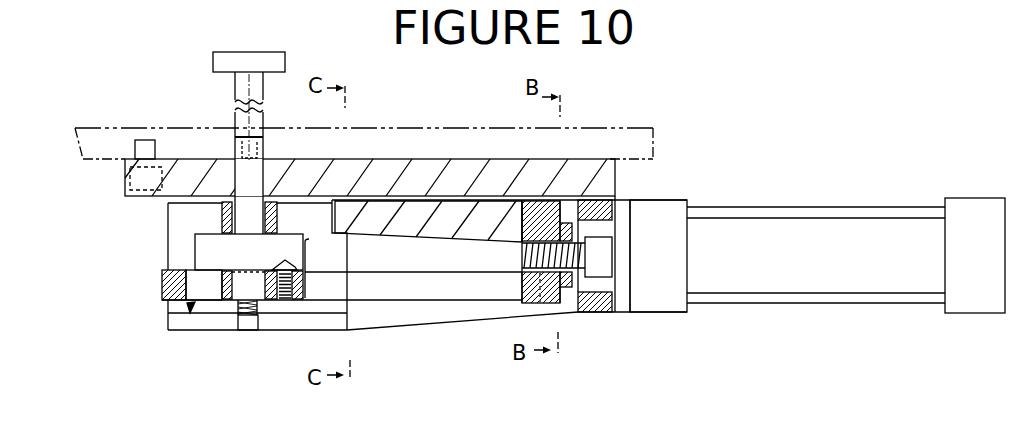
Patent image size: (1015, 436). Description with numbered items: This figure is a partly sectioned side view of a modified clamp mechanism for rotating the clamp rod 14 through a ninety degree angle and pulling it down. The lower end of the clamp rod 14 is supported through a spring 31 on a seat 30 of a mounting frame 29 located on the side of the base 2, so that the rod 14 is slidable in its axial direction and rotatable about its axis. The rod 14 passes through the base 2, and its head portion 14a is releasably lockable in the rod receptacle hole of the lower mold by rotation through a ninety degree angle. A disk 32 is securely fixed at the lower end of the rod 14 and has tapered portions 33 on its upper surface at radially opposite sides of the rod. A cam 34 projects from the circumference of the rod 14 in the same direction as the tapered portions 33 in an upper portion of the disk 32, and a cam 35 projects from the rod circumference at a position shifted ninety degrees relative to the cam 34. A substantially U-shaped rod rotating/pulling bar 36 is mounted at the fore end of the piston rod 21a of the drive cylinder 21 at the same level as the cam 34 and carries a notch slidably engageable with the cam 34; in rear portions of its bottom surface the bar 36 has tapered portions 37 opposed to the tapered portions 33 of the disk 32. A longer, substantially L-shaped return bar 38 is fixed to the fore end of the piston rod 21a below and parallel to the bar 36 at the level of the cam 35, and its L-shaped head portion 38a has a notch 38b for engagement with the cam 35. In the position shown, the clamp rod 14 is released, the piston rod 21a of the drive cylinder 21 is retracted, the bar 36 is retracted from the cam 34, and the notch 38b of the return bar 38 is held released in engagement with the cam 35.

The base 2 is at (615, 158).
The clamp rod 14 is at (234, 157).
The head portion 14a is at (213, 63).
The mold clamping drive cylinder 21 is at (777, 230).
The piston rod 21a is at (602, 248).
The mounting frame 29 is at (410, 175).
The seat 30 is at (218, 322).
The spring 31 is at (257, 303).
The disk 32 is at (203, 253).
The tapered portions 33 is at (196, 233).
The cam 34 is at (268, 202).
The cam 35 is at (297, 290).
The rod rotating/pulling bar 36 is at (458, 201).
The tapered portions 37 is at (463, 237).
The return bar 38 is at (422, 292).
The L-shaped head portion 38a is at (162, 288).
The notch 38b is at (197, 305).